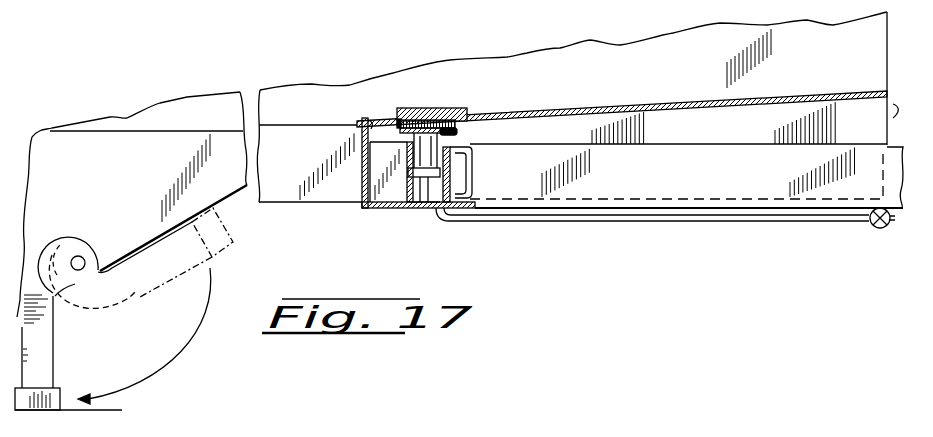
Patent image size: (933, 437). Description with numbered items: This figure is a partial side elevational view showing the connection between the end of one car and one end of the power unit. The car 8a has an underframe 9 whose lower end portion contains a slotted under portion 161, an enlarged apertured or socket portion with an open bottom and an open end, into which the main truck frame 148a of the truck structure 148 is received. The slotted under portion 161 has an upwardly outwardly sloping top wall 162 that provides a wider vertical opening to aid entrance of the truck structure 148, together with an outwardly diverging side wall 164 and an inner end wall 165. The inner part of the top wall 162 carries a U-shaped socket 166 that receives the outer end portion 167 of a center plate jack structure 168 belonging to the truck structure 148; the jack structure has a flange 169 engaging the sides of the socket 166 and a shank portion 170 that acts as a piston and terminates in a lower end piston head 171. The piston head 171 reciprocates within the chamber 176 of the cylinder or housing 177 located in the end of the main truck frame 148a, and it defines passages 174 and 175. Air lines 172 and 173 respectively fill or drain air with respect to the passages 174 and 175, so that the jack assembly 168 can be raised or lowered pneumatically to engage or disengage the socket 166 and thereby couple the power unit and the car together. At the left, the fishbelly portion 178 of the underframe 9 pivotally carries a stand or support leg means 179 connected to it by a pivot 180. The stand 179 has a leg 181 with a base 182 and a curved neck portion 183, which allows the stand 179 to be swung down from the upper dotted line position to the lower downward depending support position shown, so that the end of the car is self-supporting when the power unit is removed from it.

The forward car 8a is at (523, 57).
The underframe 9 is at (895, 123).
The truck structure 148 is at (737, 207).
The main truck frame 148a is at (590, 190).
The slotted under portion 161 is at (707, 122).
The top wall 162 is at (795, 108).
The side wall 164 is at (650, 130).
The inner end wall 165 is at (357, 123).
The U-shaped socket 166 is at (430, 110).
The outer end portion 167 is at (447, 116).
The center plate jack structure 168 is at (458, 131).
The flange 169 is at (402, 125).
The shank portion 170 is at (407, 148).
The piston head 171 is at (413, 206).
The air line 172 is at (455, 180).
The air line 173 is at (472, 222).
The passage 174 is at (462, 160).
The passage 175 is at (427, 197).
The chamber 176 is at (407, 197).
The cylinder 177 is at (423, 158).
The fishbelly portion 178 is at (143, 158).
The stand 179 is at (37, 326).
The pivot 180 is at (80, 262).
The leg 181 is at (53, 350).
The base 182 is at (62, 392).
The curved neck portion 183 is at (46, 242).